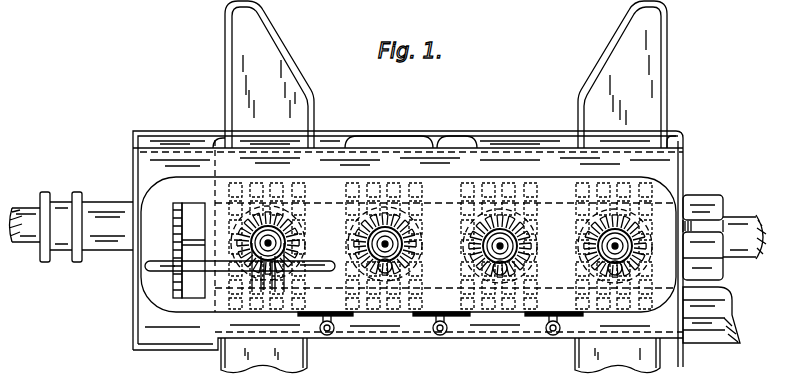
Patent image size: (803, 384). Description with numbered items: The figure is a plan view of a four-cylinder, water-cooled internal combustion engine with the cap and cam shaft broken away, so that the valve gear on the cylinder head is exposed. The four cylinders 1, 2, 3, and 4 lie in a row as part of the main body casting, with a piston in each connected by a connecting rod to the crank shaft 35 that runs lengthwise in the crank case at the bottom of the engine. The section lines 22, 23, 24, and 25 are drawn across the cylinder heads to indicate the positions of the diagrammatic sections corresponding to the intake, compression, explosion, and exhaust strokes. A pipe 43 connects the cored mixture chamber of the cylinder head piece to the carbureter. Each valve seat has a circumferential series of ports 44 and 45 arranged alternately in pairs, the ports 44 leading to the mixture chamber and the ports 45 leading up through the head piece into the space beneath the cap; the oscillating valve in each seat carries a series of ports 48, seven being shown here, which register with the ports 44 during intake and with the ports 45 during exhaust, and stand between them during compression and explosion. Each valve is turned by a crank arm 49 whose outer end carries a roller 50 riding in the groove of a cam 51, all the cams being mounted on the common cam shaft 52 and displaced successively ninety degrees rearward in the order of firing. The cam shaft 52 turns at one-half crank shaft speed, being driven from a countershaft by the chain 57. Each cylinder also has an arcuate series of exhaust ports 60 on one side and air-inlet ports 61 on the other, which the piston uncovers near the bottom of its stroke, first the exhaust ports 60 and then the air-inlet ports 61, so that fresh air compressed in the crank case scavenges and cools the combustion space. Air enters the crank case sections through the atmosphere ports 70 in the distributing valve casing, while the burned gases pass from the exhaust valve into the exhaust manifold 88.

The cylinder 1 is at (303, 235).
The cylinder 2 is at (411, 259).
The cylinder 3 is at (531, 237).
The cylinder 4 is at (585, 231).
The section line 22— 22 is at (281, 244).
The section line 23— 23 is at (400, 250).
The section line 24— 24 is at (622, 252).
The section line 25— 25 is at (495, 251).
The crank shaft 35 is at (736, 222).
The pipe 43 is at (553, 336).
The port 44 is at (412, 243).
The port 45 is at (409, 231).
The port 48 is at (640, 231).
The crank arm 49 is at (408, 244).
The roller 50 is at (507, 277).
The cam 51 is at (284, 284).
The cam shaft 52 is at (157, 259).
The chain 57 is at (174, 284).
The exhaust port 60 is at (651, 298).
The air-inlet port 61 is at (651, 189).
The atmosphere port 70 is at (446, 151).
The exhaust manifold 88 is at (726, 326).